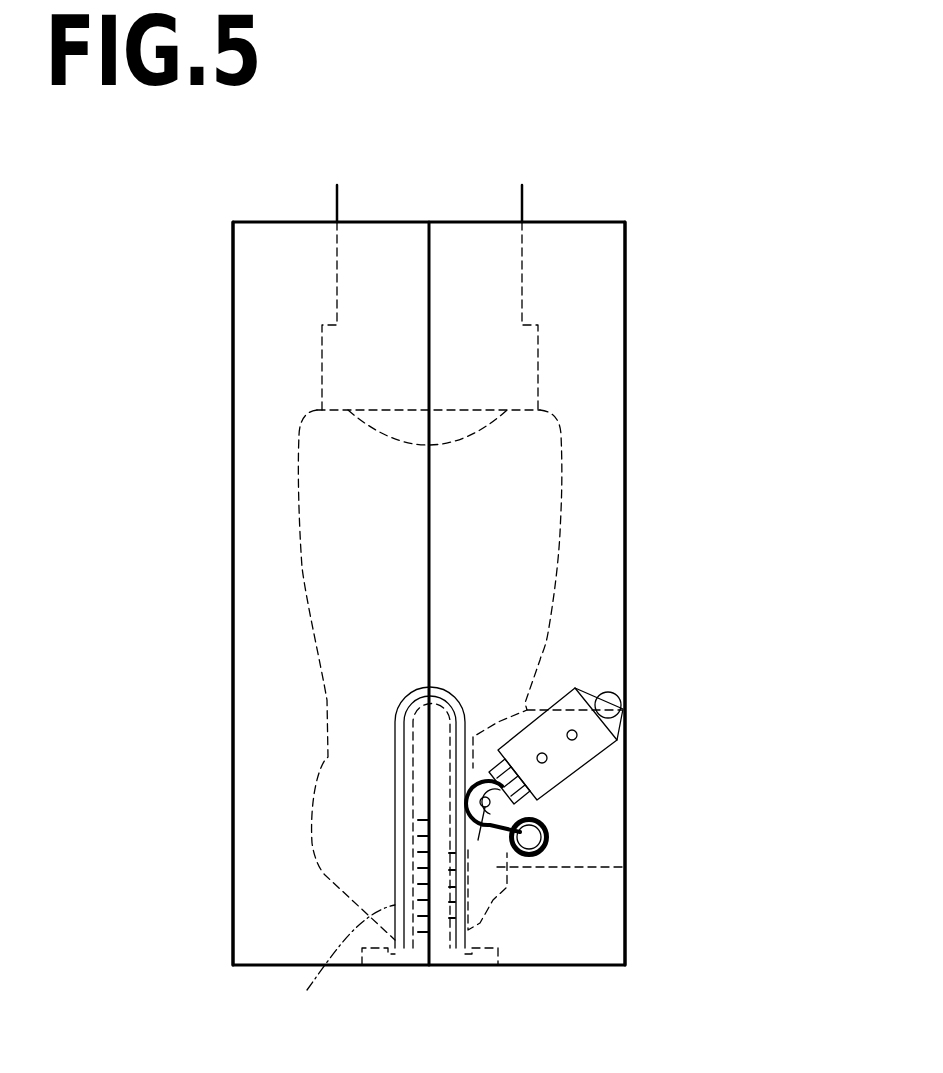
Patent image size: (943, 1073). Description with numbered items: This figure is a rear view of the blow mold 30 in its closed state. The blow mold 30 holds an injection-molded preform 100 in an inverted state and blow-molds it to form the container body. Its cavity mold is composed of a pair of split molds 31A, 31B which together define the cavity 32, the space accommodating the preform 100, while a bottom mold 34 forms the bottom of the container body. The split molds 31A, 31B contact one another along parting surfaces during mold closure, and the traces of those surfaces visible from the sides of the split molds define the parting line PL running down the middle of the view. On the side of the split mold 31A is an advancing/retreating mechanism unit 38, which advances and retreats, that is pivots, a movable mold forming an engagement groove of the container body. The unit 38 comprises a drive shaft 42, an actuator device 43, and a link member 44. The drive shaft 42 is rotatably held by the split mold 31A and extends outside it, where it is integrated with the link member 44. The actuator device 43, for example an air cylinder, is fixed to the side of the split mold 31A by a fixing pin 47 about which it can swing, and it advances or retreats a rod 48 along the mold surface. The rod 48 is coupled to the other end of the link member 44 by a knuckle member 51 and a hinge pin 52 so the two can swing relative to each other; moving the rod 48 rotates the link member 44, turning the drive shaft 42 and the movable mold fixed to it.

The blow mold 30 is at (658, 158).
The split mold 31A is at (613, 624).
The split mold 31B is at (248, 574).
The cavity 32 is at (550, 492).
The bottom mold 34 is at (517, 203).
The advancing/retreating mechanism unit 38 is at (571, 840).
The drive shaft 42 is at (541, 836).
The actuator device 43 is at (582, 758).
The link member 44 is at (523, 800).
The fixing pin 47 is at (615, 693).
The rod 48 is at (518, 776).
The knuckle member 51 is at (485, 808).
The hinge pin 52 is at (470, 825).
The preform 100 is at (337, 966).
The parting line PL is at (429, 508).